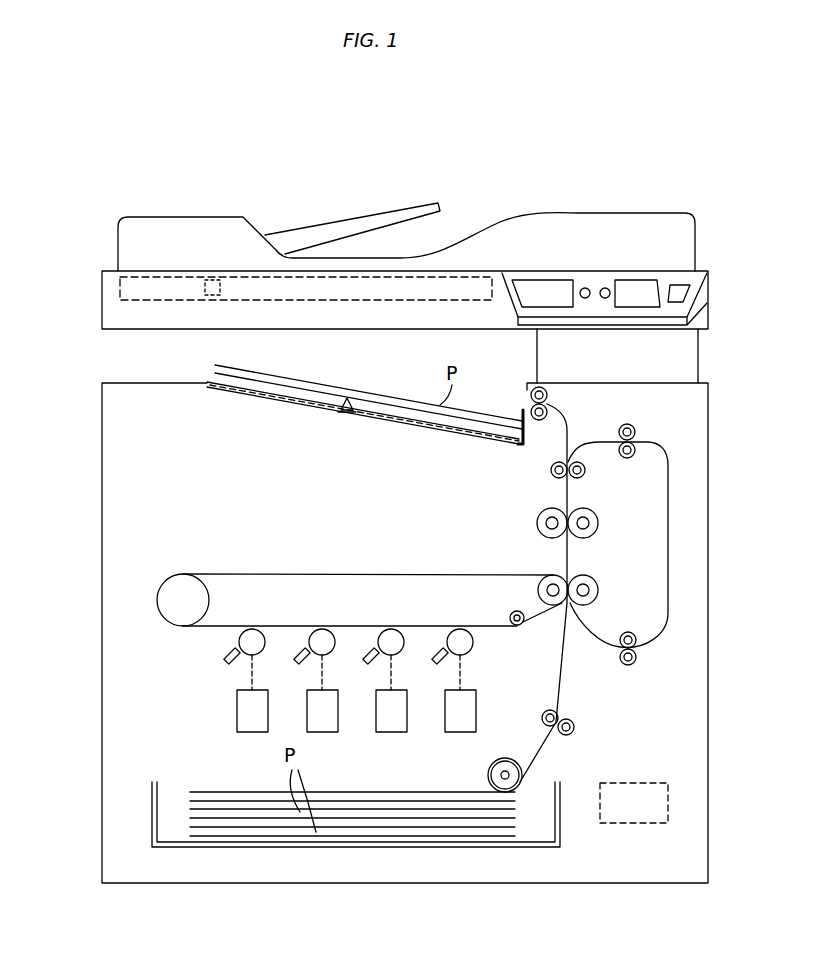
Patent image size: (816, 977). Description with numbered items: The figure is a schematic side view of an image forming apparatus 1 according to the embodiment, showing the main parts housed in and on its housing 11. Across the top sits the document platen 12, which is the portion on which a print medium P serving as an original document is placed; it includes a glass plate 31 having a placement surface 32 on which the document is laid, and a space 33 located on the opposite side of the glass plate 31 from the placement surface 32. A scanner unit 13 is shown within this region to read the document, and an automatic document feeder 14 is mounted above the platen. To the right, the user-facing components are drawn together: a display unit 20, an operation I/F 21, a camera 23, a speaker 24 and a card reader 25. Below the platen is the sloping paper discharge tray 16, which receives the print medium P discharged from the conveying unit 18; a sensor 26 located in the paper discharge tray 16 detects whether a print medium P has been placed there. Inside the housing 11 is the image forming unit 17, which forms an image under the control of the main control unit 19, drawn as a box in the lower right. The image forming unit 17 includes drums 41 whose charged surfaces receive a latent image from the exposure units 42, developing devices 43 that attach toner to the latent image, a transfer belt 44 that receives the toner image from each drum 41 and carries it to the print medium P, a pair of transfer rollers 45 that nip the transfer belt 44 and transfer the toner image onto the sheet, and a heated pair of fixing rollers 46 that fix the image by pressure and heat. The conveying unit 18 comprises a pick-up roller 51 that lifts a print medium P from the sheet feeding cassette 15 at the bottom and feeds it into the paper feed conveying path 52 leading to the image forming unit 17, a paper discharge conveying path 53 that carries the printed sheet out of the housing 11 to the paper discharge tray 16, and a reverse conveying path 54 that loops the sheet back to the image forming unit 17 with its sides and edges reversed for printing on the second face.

The image forming apparatus 1 is at (408, 130).
The housing 11 is at (102, 443).
The document platen 12 is at (102, 302).
The scanner unit 13 is at (214, 300).
The automatic document feeder (ADF) 14 is at (194, 217).
The sheet feeding cassette 15 is at (152, 808).
The paper discharge tray 16 is at (278, 395).
The image forming unit 17 is at (359, 609).
The conveying unit 18 is at (524, 495).
The main control unit 19 is at (633, 823).
The display unit 20 is at (535, 282).
The operation I/F 21 is at (640, 283).
The camera 23 is at (585, 288).
The speaker 24 is at (605, 288).
The card reader 25 is at (675, 285).
The sensor 26 is at (348, 415).
The glass plate 31 is at (462, 270).
The placement surface 32 is at (355, 270).
The space 33 is at (128, 282).
The drum 41 is at (252, 629).
The exposure unit 42 is at (252, 733).
The developing device 43 is at (227, 662).
The transfer belt 44 is at (455, 575).
The pair of transfer rollers 45 is at (594, 577).
The pair of fixing rollers 46 is at (595, 508).
The pick-up roller 51 is at (506, 757).
The paper feed conveying path 52 is at (565, 677).
The paper discharge conveying path 53 is at (570, 432).
The reverse conveying path 54 is at (668, 553).